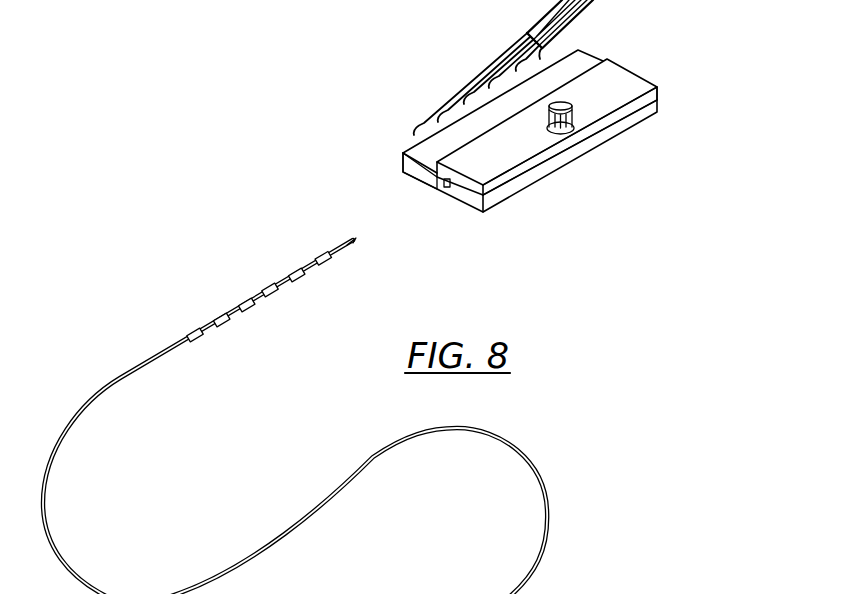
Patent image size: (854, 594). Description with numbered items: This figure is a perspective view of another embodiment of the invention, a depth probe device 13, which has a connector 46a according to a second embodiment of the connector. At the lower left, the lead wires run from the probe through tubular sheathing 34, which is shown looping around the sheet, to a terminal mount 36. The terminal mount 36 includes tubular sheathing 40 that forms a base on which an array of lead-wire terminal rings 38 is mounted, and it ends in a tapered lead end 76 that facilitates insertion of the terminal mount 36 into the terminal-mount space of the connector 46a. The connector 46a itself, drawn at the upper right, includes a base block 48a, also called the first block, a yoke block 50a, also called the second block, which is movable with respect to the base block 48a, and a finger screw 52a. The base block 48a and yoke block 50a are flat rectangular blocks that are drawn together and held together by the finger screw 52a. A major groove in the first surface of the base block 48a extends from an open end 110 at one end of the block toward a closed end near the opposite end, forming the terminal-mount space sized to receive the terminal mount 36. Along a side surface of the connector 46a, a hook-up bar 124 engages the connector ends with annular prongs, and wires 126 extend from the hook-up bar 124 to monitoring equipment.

The depth probe device 13 is at (583, 256).
The tubular sheathing 34 is at (247, 562).
The terminal mount 36 is at (258, 291).
The lead-wire terminal rings 38 is at (222, 323).
The tubular sheathing 40 is at (207, 324).
The connector 46a is at (613, 74).
The base block 48a is at (532, 181).
The yoke block 50a is at (598, 109).
The finger screw 52a is at (573, 124).
The tapered lead end 76 is at (357, 243).
The open end 110 is at (446, 188).
The hook-up bar 124 is at (418, 157).
The wires 126 is at (461, 85).